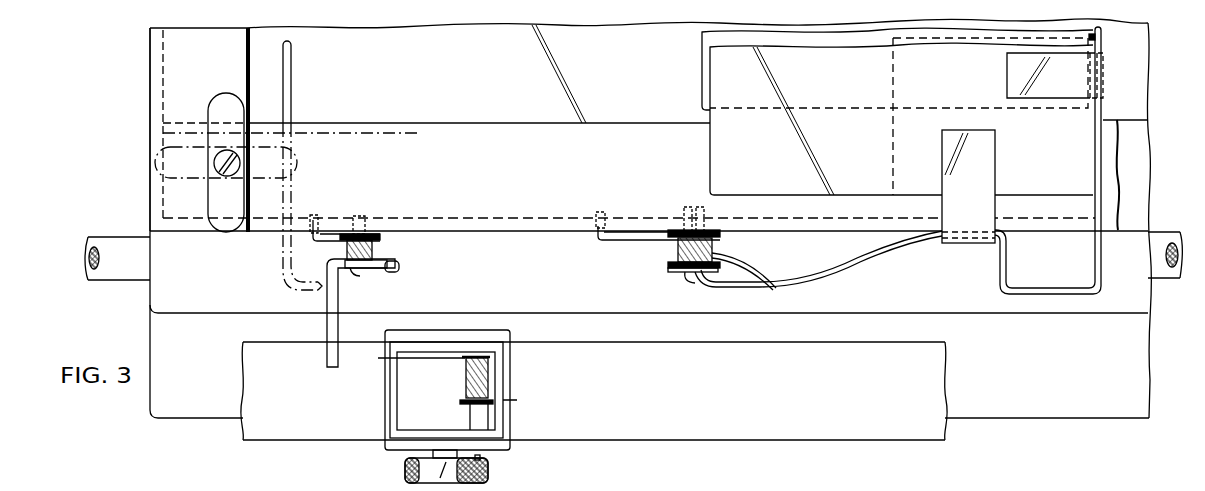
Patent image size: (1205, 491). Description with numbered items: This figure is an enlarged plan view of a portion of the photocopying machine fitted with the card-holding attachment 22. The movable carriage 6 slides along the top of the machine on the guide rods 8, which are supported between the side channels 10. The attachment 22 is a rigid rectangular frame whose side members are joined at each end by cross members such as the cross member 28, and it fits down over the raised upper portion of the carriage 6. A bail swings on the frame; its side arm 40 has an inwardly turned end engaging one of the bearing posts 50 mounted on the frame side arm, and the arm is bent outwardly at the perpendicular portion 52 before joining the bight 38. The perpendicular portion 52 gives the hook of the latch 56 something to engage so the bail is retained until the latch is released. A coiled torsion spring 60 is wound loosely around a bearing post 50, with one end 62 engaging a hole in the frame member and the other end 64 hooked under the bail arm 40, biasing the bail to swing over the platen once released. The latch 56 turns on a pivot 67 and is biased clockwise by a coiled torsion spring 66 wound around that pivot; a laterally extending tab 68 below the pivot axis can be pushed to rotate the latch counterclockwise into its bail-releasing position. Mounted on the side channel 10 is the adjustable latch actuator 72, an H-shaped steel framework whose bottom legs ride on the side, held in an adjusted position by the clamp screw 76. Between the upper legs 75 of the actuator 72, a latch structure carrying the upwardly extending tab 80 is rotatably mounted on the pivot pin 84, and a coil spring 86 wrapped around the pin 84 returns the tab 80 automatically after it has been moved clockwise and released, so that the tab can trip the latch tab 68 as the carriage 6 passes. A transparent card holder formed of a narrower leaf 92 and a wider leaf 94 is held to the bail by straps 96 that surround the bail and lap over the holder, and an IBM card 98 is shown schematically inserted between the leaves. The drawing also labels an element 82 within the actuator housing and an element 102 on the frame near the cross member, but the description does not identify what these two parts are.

The movable carriage 6 is at (222, 286).
The guide rods 8 is at (133, 264).
The side channels 10 is at (877, 400).
The attachment 22 is at (140, 114).
The cross member 28 is at (150, 74).
The bight 38 is at (296, 88).
The side arm 40 is at (857, 260).
The bearing posts 50 is at (684, 222).
The perpendicular portion 52 is at (1006, 266).
The latch 56 is at (384, 274).
The coiled torsion spring 60 is at (714, 250).
The spring end 62 is at (636, 238).
The spring end 64 is at (763, 275).
The coiled torsion spring 66 is at (375, 244).
The pivot 67 is at (348, 270).
The tab 68 is at (326, 363).
The latch actuator 72 is at (459, 390).
The upper legs 75 is at (450, 332).
The clamp screw 76 is at (490, 475).
The tab 80 is at (505, 367).
The inner frame 82 is at (400, 397).
The pivot pin 84 is at (470, 413).
The coil spring 86 is at (468, 381).
The leaf 92 is at (893, 150).
The leaf 94 is at (709, 160).
The straps 96 is at (1013, 71).
The IBM card 98 is at (702, 82).
The slot bracket 102 is at (228, 93).